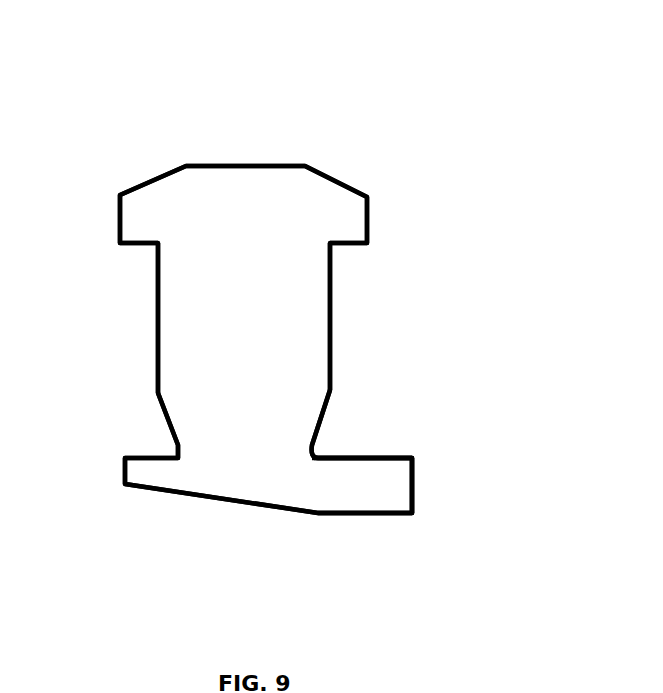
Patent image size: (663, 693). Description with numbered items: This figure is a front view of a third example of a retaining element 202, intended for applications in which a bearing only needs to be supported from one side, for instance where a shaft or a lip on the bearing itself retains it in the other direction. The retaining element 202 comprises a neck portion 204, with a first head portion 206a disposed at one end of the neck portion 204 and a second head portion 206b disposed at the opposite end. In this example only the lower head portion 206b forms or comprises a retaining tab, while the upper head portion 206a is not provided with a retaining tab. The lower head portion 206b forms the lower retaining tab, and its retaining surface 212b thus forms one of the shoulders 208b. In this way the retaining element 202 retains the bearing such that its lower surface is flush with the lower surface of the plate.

The retaining element 202 is at (297, 130).
The neck portion 204 is at (251, 352).
The first head portion 206a is at (318, 208).
The second head portion 206b is at (237, 499).
The shoulder 208b is at (350, 483).
The retaining surface 212b is at (372, 456).